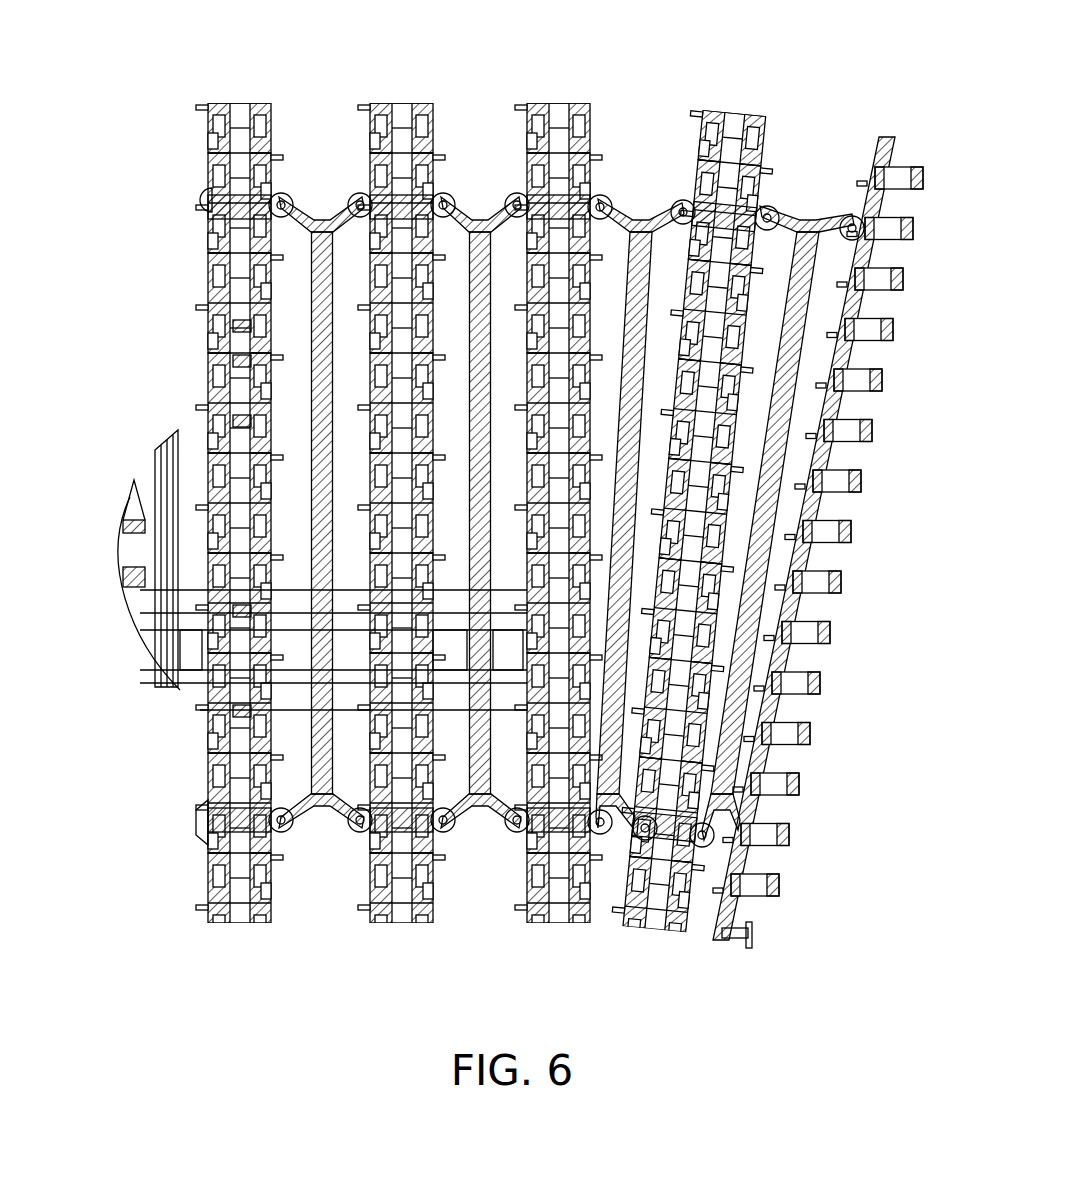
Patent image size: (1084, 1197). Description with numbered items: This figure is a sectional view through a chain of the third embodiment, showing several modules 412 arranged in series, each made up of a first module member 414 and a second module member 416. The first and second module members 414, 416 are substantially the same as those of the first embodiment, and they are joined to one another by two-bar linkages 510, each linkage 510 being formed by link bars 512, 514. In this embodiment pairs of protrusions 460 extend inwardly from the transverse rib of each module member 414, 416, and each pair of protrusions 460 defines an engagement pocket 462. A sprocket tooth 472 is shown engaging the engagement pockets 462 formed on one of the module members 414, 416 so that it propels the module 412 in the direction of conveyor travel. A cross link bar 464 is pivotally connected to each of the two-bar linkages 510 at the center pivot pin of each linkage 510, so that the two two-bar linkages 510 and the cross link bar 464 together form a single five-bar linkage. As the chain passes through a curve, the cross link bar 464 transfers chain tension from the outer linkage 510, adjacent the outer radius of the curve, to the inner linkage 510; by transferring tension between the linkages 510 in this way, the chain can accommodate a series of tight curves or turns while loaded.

The module 412 is at (328, 110).
The first module member 414 is at (276, 104).
The second module member 416 is at (372, 104).
The protrusions 460 is at (290, 400).
The engagement pockets 462 is at (355, 370).
The cross link bar 464 is at (313, 300).
The sprocket tooth 472 is at (287, 650).
The linkages 510 is at (300, 202).
The link bar 512 is at (296, 218).
The link bar 514 is at (330, 213).